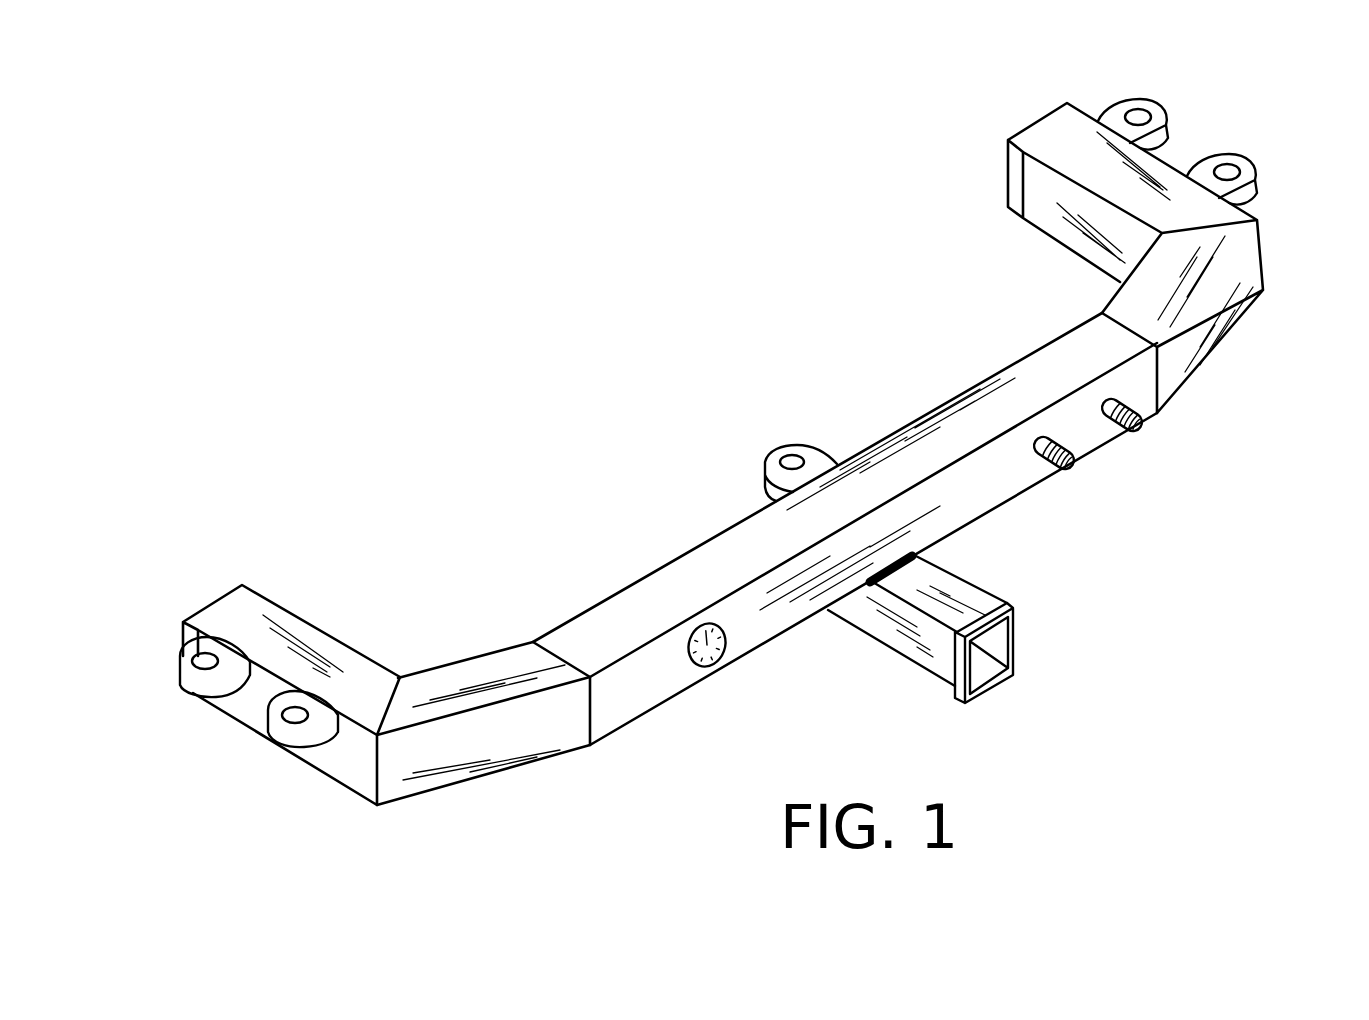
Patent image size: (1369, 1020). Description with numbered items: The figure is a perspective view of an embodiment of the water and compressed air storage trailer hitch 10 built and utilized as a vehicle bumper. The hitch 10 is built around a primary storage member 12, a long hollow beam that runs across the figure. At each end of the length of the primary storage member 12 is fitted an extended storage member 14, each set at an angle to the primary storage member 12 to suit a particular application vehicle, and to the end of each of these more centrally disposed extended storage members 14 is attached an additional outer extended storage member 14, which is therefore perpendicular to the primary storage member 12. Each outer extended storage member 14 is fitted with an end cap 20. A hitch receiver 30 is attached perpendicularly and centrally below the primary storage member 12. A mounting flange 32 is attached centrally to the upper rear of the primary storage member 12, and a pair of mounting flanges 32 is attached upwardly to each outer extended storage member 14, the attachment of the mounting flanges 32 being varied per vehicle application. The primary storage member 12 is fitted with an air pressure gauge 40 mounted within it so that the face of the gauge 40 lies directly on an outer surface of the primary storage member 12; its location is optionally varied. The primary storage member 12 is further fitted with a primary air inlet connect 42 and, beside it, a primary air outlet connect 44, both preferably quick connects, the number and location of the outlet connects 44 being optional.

The water and compressed air storage trailer hitch 10 is at (592, 162).
The primary storage member 12 is at (993, 373).
The extended storage member 14 is at (338, 643).
The end cap 20 is at (230, 600).
The hitch receiver 30 is at (1013, 640).
The mounting flange 32 is at (180, 676).
The air pressure gauge 40 is at (732, 637).
The primary air inlet connect 42 is at (1075, 465).
The primary air outlet connect 44 is at (1142, 426).